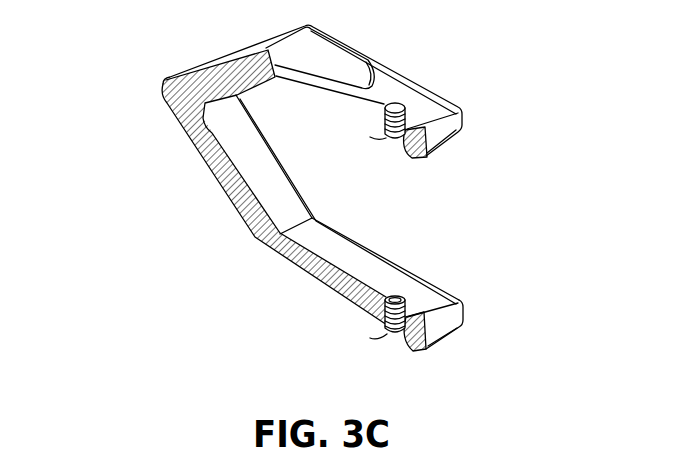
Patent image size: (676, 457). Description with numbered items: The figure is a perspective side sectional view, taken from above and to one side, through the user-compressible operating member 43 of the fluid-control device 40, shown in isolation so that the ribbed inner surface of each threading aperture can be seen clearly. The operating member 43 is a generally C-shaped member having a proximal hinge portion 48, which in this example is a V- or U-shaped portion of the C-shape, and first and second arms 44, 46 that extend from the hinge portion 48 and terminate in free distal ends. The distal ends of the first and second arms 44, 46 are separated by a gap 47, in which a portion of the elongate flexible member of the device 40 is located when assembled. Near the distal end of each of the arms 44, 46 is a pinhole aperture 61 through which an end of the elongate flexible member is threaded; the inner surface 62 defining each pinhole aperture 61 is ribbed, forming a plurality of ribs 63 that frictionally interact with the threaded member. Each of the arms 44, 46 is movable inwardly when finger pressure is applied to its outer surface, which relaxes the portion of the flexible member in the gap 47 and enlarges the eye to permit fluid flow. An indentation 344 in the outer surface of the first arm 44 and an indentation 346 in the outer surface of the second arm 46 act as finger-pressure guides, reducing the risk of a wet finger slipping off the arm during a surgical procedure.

The device 40 is at (137, 228).
The user-compressible operating member 43 is at (384, 77).
The first arm 44 is at (464, 113).
The second arm 46 is at (464, 301).
The gap 47 is at (522, 218).
The proximal hinge portion 48 is at (163, 85).
The pinhole aperture 61 is at (410, 100).
The ribbed inner surface 62 is at (388, 138).
The ribs 63 is at (392, 290).
The indentation 344 is at (328, 60).
The indentation 346 is at (310, 278).